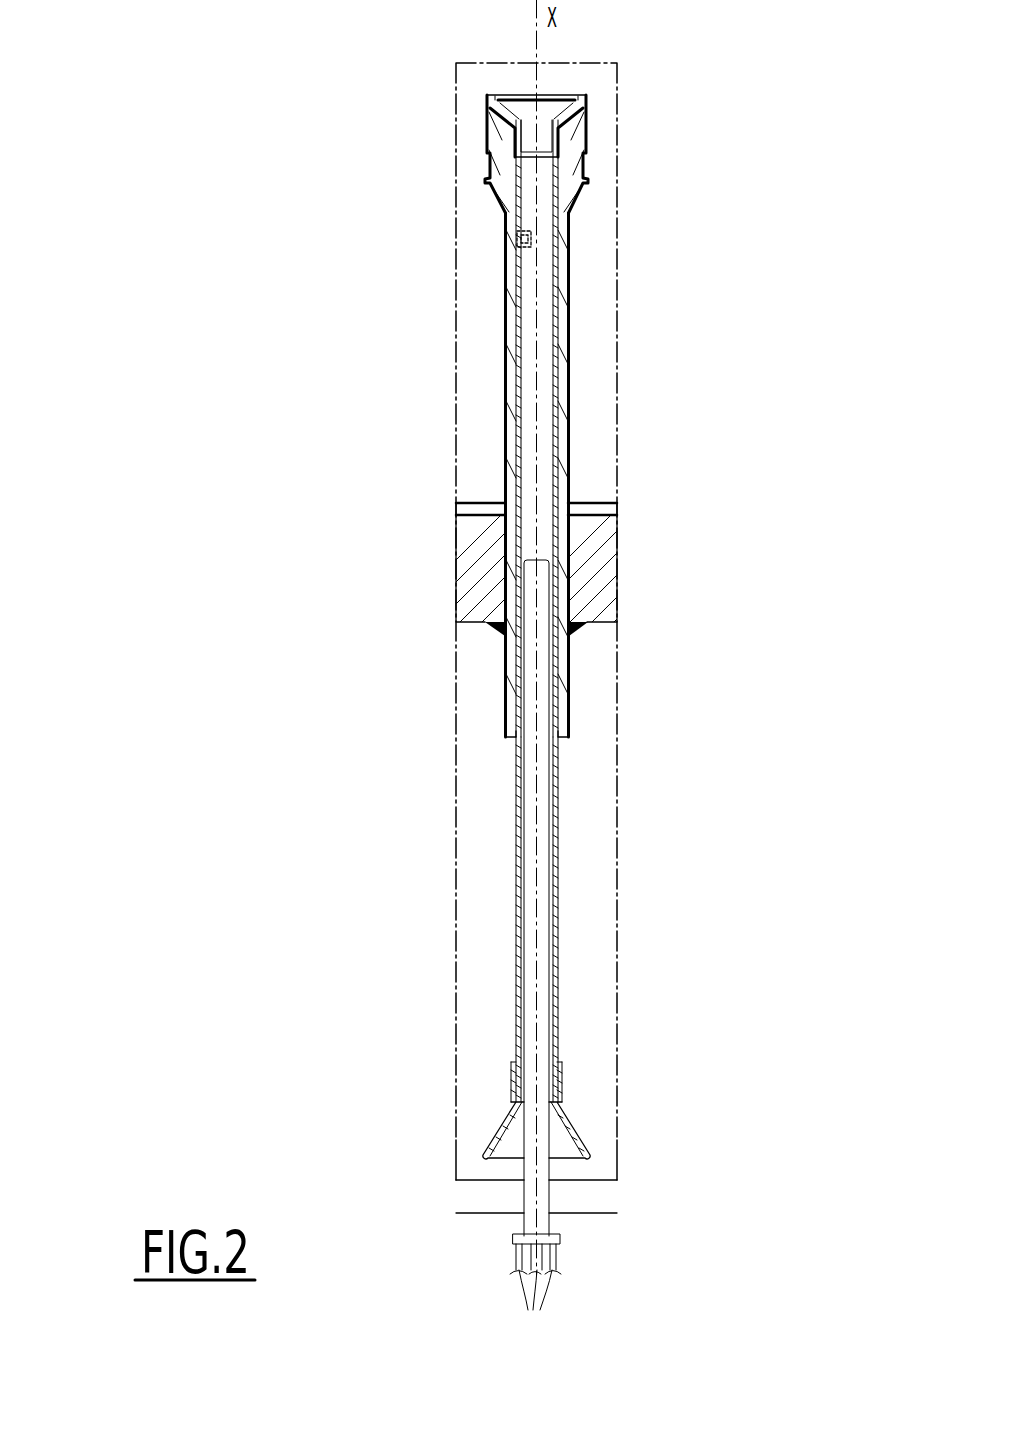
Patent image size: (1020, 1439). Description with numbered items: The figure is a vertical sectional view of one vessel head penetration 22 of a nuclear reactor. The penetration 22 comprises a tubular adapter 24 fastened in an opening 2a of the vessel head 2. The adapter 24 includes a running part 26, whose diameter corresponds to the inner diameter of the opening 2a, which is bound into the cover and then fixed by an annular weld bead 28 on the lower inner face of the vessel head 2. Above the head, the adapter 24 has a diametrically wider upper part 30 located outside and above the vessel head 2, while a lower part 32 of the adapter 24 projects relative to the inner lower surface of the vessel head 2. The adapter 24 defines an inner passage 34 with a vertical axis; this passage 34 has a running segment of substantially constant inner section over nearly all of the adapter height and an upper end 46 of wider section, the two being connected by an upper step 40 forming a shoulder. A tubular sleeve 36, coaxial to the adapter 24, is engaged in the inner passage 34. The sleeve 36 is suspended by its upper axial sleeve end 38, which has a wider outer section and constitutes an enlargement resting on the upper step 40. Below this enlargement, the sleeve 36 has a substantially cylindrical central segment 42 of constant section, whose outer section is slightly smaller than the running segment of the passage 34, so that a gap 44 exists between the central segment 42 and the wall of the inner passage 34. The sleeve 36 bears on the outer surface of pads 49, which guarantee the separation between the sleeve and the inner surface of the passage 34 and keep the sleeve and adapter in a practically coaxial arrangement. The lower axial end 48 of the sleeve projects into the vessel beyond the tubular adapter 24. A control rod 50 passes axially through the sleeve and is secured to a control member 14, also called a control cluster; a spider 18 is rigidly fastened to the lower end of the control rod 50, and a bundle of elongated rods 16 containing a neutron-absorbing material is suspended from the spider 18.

The vessel head 2 is at (601, 581).
The opening 2a is at (600, 538).
The control member 14 is at (568, 1242).
The elongated rods 16 is at (535, 1308).
The spider 18 is at (513, 1238).
The vessel head penetration 22 is at (585, 408).
The tubular adapter 24 is at (483, 228).
The running part 26 is at (568, 607).
The annular weld bead 28 is at (577, 627).
The upper part 30 is at (603, 170).
The lower part 32 is at (563, 711).
The inner passage 34 is at (552, 155).
The tubular sleeve 36 is at (516, 72).
The upper axial sleeve end 38 is at (562, 113).
The upper step 40 is at (505, 117).
The central segment 42 is at (553, 766).
The gap 44 is at (555, 213).
The upper end 46 is at (560, 113).
The lower axial end 48 is at (588, 1105).
The pads 49 is at (517, 240).
The control rod 50 is at (553, 1167).